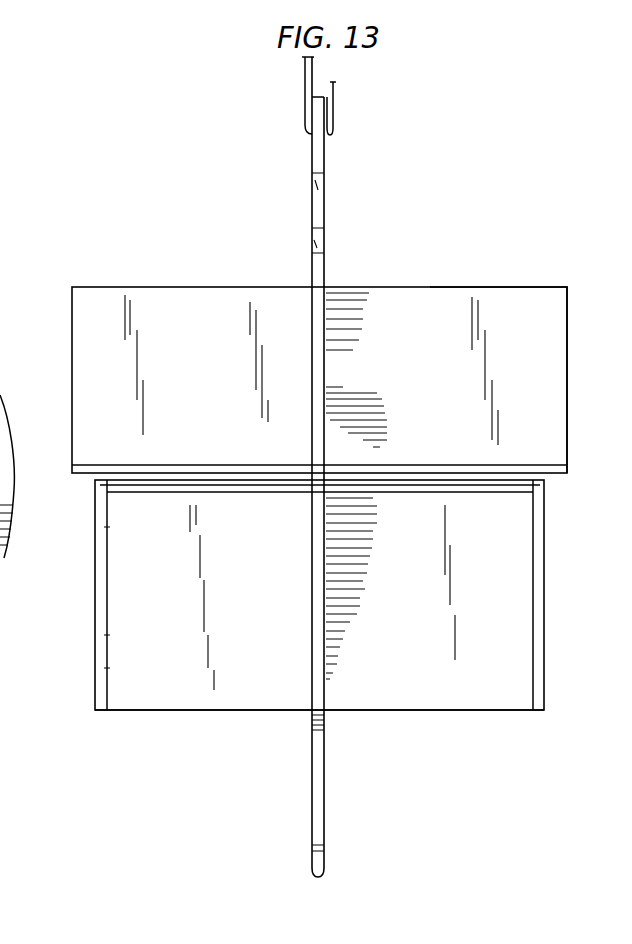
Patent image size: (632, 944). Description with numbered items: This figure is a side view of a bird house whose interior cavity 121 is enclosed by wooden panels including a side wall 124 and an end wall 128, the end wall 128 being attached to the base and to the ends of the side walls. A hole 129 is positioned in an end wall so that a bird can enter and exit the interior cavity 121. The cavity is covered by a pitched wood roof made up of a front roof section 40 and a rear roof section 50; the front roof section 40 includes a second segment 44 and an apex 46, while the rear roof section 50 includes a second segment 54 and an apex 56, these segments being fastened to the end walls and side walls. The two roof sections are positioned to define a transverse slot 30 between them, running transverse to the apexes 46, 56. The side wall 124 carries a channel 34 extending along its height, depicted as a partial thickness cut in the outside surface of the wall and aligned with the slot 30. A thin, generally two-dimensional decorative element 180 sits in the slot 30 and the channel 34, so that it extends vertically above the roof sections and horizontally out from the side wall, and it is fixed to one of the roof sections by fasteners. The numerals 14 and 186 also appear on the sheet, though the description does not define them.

The adjacent module 14 is at (12, 332).
The transverse slot 30 is at (320, 375).
The channel 34 is at (313, 614).
The front roof section 40 is at (130, 272).
The second segment of front roof section 44 is at (226, 338).
The apex of front roof section 46 is at (270, 287).
The rear roof section 50 is at (472, 270).
The second segment of rear roof section 54 is at (425, 317).
The apex of rear roof section 56 is at (378, 287).
The interior cavity 121 is at (205, 712).
The side wall 124 is at (100, 666).
The end wall 128 is at (542, 632).
The hole 129 is at (106, 526).
The decorative element 180 is at (322, 210).
The side wall portion 186 is at (49, 670).